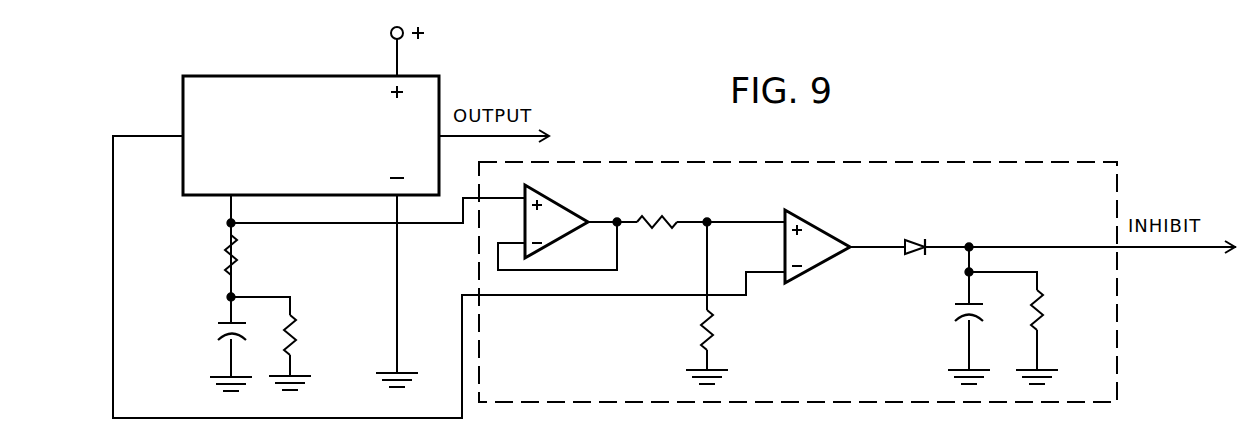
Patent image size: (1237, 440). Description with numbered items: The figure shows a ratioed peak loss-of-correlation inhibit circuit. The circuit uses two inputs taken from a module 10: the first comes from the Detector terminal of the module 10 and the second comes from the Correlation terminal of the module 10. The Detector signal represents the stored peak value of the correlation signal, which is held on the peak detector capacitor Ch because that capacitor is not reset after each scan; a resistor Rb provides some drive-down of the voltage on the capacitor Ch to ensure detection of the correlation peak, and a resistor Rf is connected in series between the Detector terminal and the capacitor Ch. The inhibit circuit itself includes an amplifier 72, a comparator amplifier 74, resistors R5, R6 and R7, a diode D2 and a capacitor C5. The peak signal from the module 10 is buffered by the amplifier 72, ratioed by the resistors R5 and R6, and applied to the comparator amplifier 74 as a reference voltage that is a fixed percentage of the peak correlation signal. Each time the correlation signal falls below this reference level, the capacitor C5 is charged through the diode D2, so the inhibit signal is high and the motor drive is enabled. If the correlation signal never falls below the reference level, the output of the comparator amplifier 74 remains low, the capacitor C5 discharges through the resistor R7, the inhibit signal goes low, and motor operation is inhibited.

The module 10 is at (308, 76).
The amplifier 72 is at (545, 190).
The comparator amplifier 74 is at (813, 224).
The resistor R5 is at (657, 208).
The resistor R6 is at (688, 330).
The resistor R7 is at (1052, 310).
The capacitor C5 is at (951, 311).
The diode D2 is at (918, 233).
The resistor Rf is at (243, 255).
The resistor Rb is at (304, 335).
The peak detector capacitor Ch is at (215, 330).